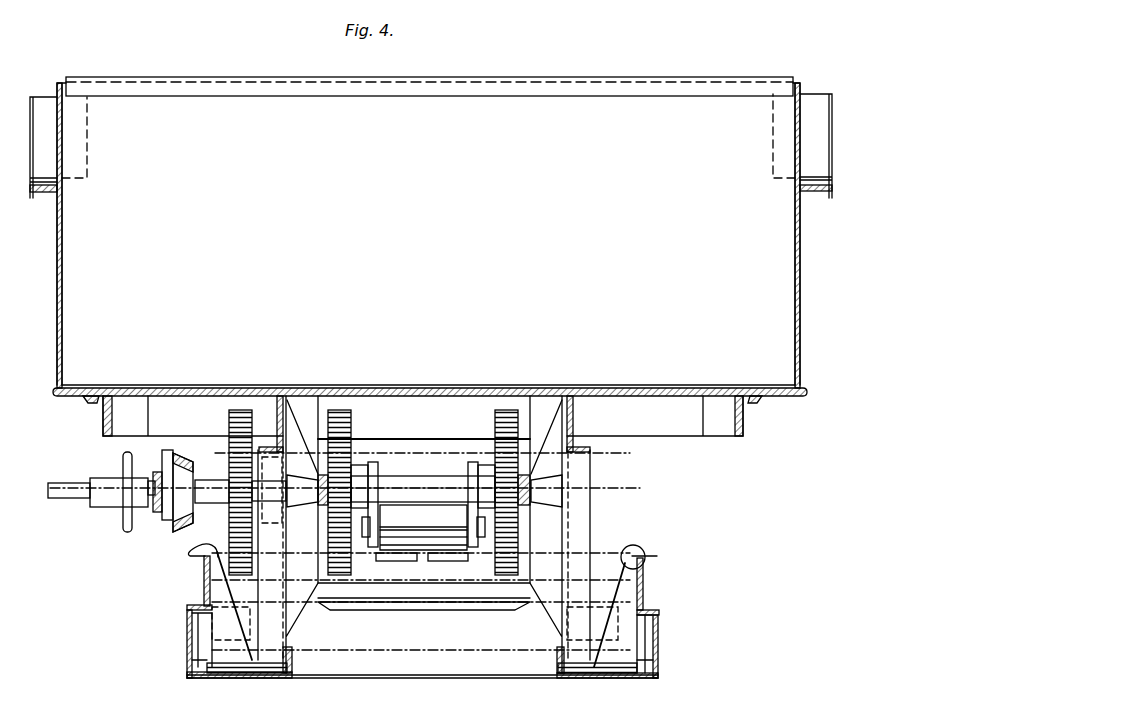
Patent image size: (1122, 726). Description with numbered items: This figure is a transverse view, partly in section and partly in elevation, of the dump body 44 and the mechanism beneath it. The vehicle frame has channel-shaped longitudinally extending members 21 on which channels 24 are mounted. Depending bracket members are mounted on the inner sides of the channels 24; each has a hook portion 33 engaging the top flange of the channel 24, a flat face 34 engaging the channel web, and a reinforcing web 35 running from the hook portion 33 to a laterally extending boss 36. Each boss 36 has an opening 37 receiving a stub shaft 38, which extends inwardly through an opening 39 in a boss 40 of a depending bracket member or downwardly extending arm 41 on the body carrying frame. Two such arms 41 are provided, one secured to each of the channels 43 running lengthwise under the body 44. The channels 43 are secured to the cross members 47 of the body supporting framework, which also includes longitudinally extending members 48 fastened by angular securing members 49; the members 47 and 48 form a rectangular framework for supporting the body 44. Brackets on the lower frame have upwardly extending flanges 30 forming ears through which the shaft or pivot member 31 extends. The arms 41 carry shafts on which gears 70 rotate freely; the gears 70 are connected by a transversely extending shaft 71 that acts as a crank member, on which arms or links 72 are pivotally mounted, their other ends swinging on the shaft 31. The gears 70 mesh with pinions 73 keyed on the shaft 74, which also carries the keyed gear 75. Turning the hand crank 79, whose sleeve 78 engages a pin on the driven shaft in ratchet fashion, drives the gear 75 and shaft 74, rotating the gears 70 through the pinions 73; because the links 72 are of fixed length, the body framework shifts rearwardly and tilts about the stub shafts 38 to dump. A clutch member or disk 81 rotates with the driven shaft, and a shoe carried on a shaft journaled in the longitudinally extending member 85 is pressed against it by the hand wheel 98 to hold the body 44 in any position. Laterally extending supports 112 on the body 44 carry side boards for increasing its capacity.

The body 44 is at (530, 105).
The laterally extending supports 112 is at (47, 192).
The cross members 47 is at (437, 398).
The angular securing members 49 is at (125, 418).
The longitudinally extending members 48 is at (93, 403).
The channels 43 is at (283, 398).
The boss 40 is at (290, 638).
The gears 70 is at (341, 410).
The gear 75 is at (232, 423).
The depending bracket member 41 is at (268, 533).
The pinions 73 is at (342, 472).
The transversely extending shaft 71 is at (395, 480).
The arms or links 72 is at (375, 462).
The shaft 74 is at (392, 490).
The shaft or pivot member 31 is at (418, 529).
The upwardly extending flanges 30 is at (455, 532).
The handle member or hand crank 79 is at (55, 485).
The sleeve 78 is at (92, 483).
The hand wheel 98 is at (125, 468).
The longitudinally extending member 85 is at (156, 512).
The clutch member or disk 81 is at (178, 455).
The hook portions 33 is at (196, 550).
The channels 24 is at (204, 578).
The flat face 34 is at (207, 605).
The longitudinally extending members 21 is at (190, 640).
The reinforcing web 35 is at (222, 622).
The stub shaft 38 is at (185, 660).
The laterally extending boss 36 is at (240, 675).
The opening 37 is at (210, 678).
The opening 39 is at (272, 678).